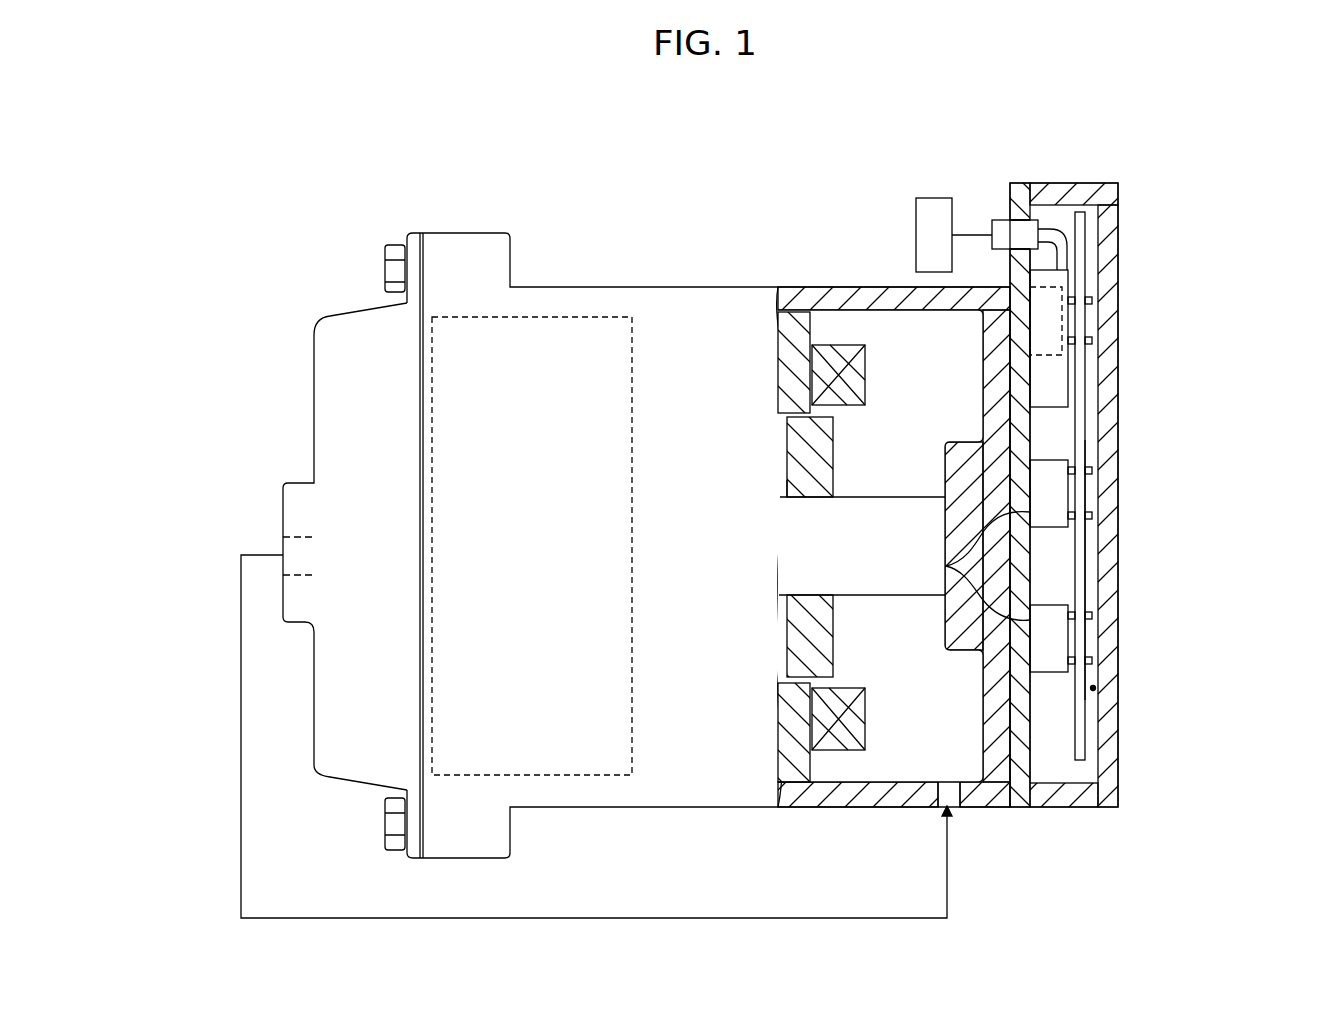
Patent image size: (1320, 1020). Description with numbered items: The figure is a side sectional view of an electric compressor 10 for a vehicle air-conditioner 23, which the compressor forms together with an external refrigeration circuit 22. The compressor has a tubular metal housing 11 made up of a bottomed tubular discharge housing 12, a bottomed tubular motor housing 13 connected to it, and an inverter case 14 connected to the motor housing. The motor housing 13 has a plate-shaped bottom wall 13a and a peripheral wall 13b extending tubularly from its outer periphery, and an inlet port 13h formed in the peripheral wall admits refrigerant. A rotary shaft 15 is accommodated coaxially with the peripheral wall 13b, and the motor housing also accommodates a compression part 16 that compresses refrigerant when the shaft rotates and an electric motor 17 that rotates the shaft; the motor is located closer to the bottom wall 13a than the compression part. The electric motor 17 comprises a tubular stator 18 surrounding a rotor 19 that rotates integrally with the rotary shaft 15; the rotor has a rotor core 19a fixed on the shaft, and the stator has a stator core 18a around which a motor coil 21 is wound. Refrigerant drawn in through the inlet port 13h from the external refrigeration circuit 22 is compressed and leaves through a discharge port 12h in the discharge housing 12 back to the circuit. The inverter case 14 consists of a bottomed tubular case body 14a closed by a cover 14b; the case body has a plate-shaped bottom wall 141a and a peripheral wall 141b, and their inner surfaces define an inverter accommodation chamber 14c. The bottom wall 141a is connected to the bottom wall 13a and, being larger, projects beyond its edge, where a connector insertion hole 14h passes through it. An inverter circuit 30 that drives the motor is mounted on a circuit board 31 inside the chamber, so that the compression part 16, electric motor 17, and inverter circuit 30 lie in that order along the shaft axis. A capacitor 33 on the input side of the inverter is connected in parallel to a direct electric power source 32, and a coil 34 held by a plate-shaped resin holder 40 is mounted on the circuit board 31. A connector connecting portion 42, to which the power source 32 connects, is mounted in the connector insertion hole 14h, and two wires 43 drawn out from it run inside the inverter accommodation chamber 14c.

The electric compressor 10 is at (322, 279).
The housing 11 is at (695, 287).
The discharge housing 12 is at (324, 547).
The discharge port 12h is at (283, 537).
The motor housing 13 is at (809, 522).
The bottom wall 13a is at (986, 681).
The peripheral wall 13b is at (886, 287).
The inlet port 13h is at (949, 790).
The inverter case 14 is at (1044, 470).
The case body 14a is at (1070, 183).
The cover 14b is at (1110, 183).
The inverter accommodation chamber 14c is at (1096, 688).
The connector insertion hole 14h is at (1012, 249).
The bottom wall 141a is at (1020, 713).
The peripheral wall 141b is at (1058, 808).
The rotary shaft 15 is at (889, 597).
The compression part 16 is at (560, 316).
The electric motor 17 is at (793, 308).
The stator 18 is at (887, 547).
The stator core 18a is at (865, 366).
The rotor 19 is at (803, 547).
The rotor core 19a is at (790, 493).
The motor coil 21 is at (868, 564).
The external refrigeration circuit 22 is at (950, 884).
The vehicle air-conditioner 23 is at (1029, 891).
The inverter circuit 30 is at (1087, 228).
The circuit board 31 is at (1086, 556).
The direct electric power source 32 is at (919, 199).
The capacitor 33 is at (947, 561).
The coil 34 is at (1050, 357).
The holder 40 is at (1060, 375).
The connector connecting portion 42 is at (1000, 220).
The wires 43 is at (1056, 225).